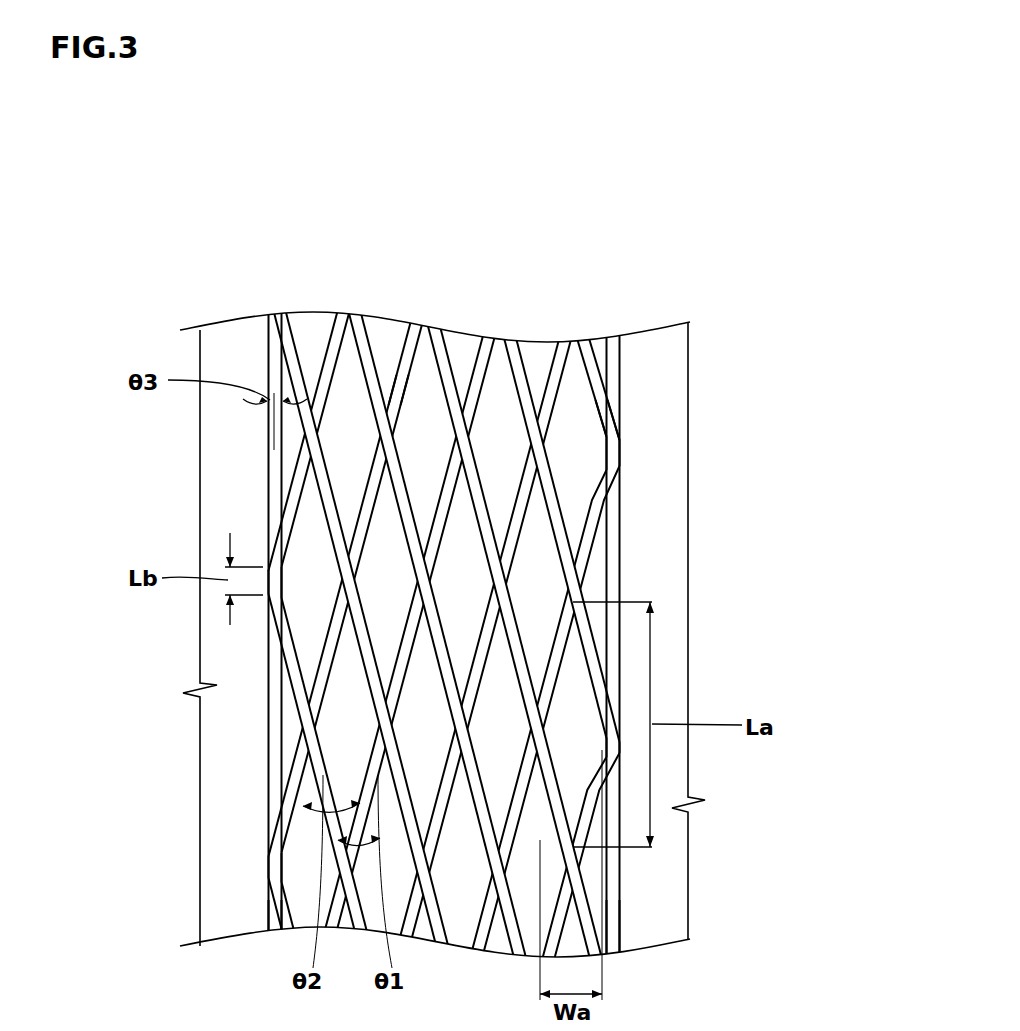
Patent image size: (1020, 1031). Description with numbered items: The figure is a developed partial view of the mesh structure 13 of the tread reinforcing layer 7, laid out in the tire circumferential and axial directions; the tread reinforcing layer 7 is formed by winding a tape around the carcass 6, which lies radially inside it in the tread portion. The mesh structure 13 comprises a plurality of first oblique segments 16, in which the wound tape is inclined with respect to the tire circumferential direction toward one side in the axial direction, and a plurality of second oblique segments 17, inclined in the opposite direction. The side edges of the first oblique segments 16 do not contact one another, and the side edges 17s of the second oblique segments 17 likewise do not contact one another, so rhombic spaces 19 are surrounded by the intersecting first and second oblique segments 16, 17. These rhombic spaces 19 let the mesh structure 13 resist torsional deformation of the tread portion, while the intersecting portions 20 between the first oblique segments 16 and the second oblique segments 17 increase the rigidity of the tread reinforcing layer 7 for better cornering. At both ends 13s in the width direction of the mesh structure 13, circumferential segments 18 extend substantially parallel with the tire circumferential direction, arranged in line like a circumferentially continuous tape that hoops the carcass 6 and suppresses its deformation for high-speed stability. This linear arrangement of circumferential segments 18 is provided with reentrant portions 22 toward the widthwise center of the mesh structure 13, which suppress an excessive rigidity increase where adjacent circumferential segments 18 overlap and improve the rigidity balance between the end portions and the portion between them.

The carcass 6 is at (230, 820).
The tread reinforcing layer 7 is at (676, 243).
The mesh structure 13 is at (497, 318).
The ends in the width direction of the mesh structure 13s is at (268, 907).
The first oblique segments 16 is at (414, 611).
The second oblique segments 17 is at (477, 487).
The side edges of the second oblique segments 17s is at (549, 455).
The circumferential segments 18 is at (272, 358).
The rhombic spaces 19 is at (314, 498).
The intersecting portions 20 is at (458, 423).
The reentrant portions 22 is at (260, 604).